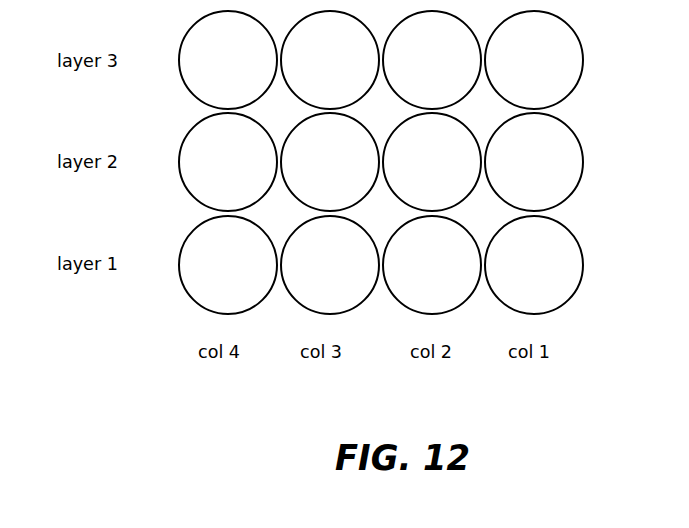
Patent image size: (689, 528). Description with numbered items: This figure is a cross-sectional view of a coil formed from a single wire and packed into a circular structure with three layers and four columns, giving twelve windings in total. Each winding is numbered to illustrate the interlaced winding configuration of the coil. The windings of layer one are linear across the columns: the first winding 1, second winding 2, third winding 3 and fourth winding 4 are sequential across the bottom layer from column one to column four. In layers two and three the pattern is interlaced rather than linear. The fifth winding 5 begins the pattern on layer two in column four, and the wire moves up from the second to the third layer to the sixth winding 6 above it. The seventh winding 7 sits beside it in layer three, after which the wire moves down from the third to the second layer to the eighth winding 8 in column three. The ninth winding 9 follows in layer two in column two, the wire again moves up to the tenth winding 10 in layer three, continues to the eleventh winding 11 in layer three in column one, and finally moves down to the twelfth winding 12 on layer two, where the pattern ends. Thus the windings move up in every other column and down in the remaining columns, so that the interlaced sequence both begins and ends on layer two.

The first winding 1 is at (534, 265).
The second winding 2 is at (432, 265).
The third winding 3 is at (330, 265).
The fourth winding 4 is at (228, 265).
The fifth winding 5 is at (228, 162).
The sixth winding 6 is at (228, 60).
The seventh winding 7 is at (330, 60).
The eighth winding 8 is at (330, 162).
The ninth winding 9 is at (432, 162).
The tenth winding 10 is at (432, 60).
The eleventh winding 11 is at (534, 60).
The twelfth winding 12 is at (534, 162).